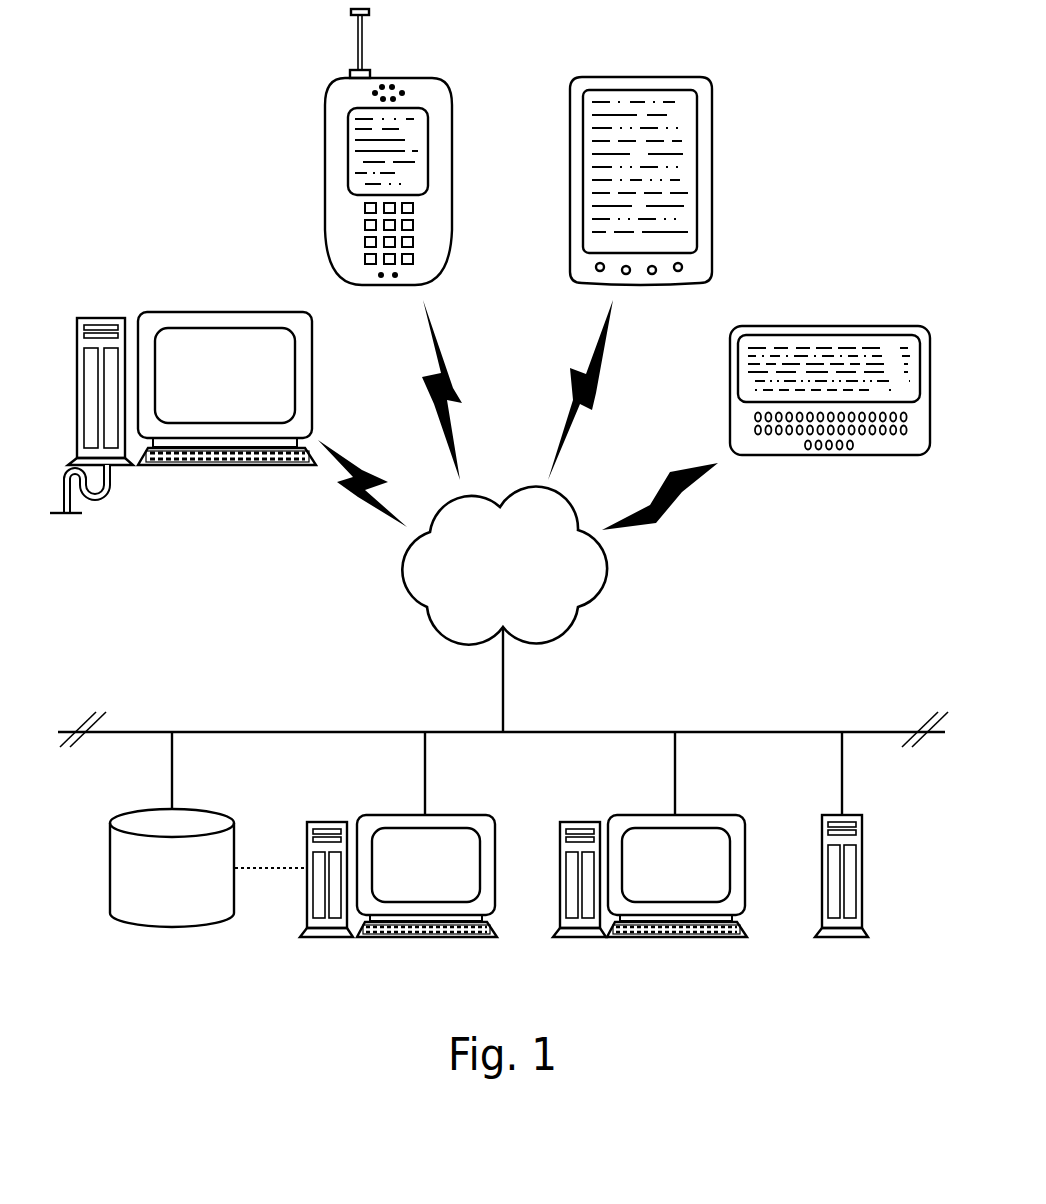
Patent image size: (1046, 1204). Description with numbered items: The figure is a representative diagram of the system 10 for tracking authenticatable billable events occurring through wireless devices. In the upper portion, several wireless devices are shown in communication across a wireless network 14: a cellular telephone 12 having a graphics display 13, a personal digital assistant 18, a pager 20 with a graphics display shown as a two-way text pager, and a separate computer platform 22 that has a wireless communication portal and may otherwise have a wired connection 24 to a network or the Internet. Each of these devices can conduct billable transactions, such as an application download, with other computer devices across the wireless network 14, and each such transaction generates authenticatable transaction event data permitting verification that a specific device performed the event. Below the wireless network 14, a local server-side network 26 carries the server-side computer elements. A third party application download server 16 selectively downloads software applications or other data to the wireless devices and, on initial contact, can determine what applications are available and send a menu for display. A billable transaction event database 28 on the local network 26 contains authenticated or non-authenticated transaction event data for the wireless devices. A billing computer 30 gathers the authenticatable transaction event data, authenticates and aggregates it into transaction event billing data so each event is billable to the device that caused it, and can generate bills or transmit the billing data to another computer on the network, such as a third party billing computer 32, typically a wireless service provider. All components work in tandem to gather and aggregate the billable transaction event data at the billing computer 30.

The system 10 is at (836, 158).
The cellular telephone 12 is at (432, 80).
The graphics display 13 is at (428, 146).
The wireless network 14 is at (608, 568).
The third party application download server 16 is at (400, 813).
The personal digital assistant 18 is at (641, 77).
The pager 20 is at (866, 455).
The computer platform 22 is at (215, 312).
The wired connection 24 is at (119, 502).
The local network 26 is at (722, 731).
The billable transaction event database 28 is at (109, 870).
The billing computer 30 is at (658, 813).
The third party billing computer 32 is at (862, 848).